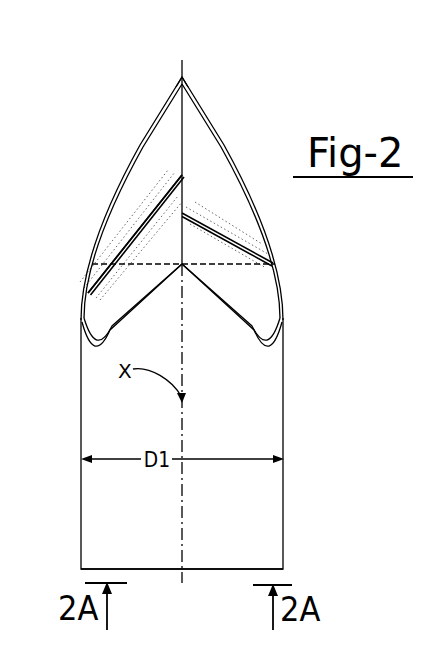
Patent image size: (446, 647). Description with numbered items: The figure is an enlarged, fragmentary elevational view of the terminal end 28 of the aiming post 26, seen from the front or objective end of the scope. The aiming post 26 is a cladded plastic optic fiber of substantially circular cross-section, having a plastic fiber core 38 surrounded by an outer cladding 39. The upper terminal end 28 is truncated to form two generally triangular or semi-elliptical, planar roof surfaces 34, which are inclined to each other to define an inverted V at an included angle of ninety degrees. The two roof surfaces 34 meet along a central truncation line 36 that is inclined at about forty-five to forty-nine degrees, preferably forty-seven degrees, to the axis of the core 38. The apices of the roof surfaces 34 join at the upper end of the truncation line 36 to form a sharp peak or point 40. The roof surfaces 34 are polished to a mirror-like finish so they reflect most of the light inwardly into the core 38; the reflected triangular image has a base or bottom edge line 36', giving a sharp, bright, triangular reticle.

The aiming post 26 is at (289, 521).
The terminal end 28 is at (219, 90).
The roof surfaces 34 is at (244, 247).
The central truncation line 36 is at (192, 201).
The base or bottom edge line 36' is at (103, 247).
The fiber core 38 is at (228, 552).
The outer cladding 39 is at (284, 372).
The peak or point 40 is at (182, 77).